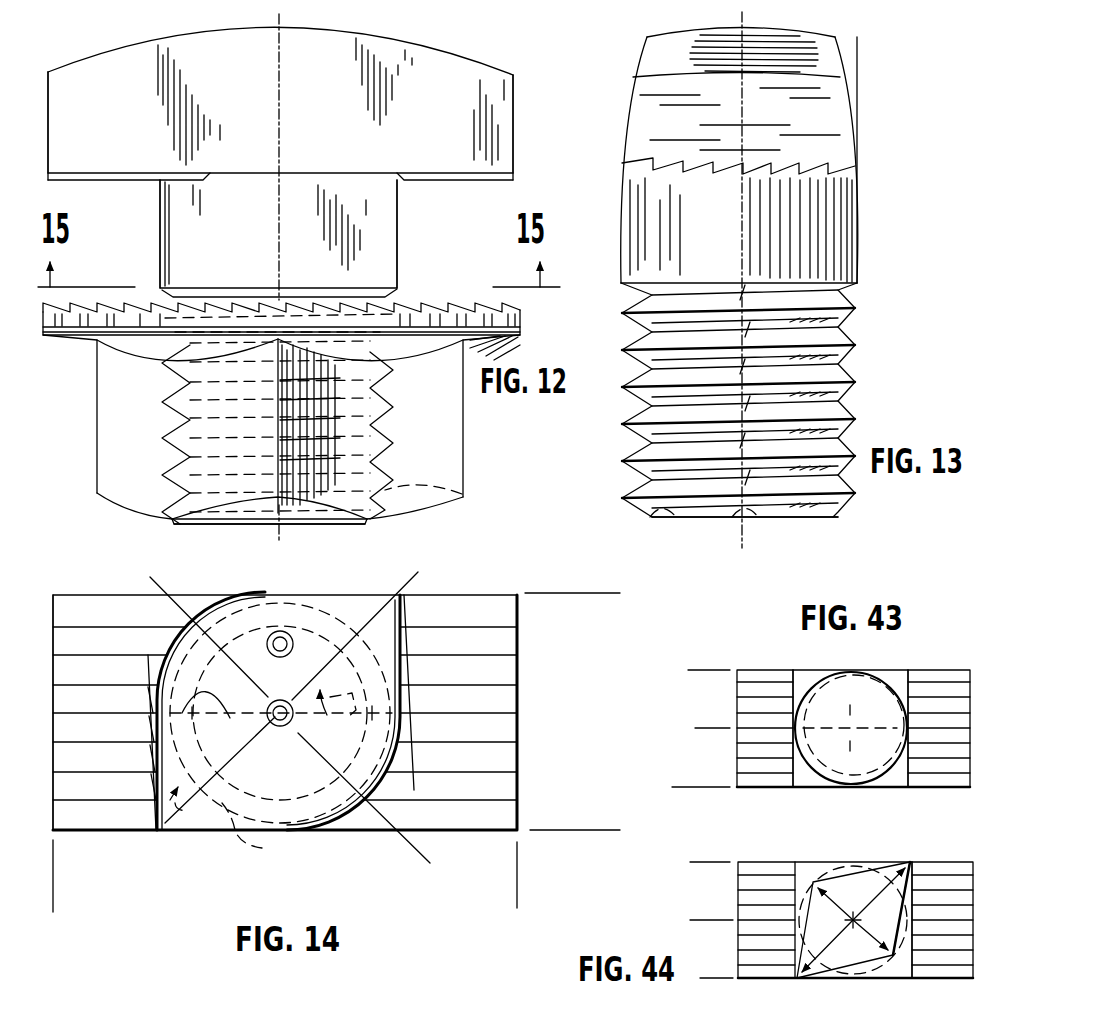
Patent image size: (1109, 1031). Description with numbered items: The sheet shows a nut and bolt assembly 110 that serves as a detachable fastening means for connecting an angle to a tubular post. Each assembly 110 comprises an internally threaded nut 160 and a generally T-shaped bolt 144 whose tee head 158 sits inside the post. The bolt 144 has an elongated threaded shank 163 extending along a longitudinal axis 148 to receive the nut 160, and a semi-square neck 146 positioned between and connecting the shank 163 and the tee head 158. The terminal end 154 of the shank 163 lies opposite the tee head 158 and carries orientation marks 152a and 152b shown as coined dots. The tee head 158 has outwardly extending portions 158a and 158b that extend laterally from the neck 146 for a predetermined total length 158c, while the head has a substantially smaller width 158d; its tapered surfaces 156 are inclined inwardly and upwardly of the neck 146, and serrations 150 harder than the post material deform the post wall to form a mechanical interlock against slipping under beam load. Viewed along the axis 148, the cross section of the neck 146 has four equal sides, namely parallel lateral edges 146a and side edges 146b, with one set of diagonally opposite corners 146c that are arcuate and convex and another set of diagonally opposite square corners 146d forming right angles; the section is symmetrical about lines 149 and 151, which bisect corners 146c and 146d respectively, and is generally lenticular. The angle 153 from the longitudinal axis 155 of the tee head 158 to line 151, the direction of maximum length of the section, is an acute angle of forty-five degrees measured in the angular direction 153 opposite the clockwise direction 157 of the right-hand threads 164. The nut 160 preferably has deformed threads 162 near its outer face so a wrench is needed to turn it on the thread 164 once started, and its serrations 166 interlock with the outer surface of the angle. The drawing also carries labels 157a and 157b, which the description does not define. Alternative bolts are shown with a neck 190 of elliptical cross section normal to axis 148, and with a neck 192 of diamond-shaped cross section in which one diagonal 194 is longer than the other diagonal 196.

In FIG. 12, the nut and bolt assembly 110 is at (158, 263).
In FIG. 12, the bolt 144 is at (368, 222).
In FIG. 13, the bolt 144 is at (862, 201).
In FIG. 14, the bolt 144 is at (566, 555).
In FIG. 43, the bolt 144 is at (974, 668).
In FIG. 44, the bolt 144 is at (971, 858).
In FIG. 12, the semi-square neck 146 is at (398, 257).
In FIG. 13, the semi-square neck 146 is at (858, 258).
In FIG. 14, the semi-square neck 146 is at (207, 834).
In FIG. 14, the lateral edges 146a is at (337, 578).
In FIG. 14, the side edges 146b is at (160, 757).
In FIG. 14, the arcuate corners 146c is at (167, 641).
In FIG. 14, the square corners 146d is at (398, 597).
In FIG. 12, the longitudinal axis 148 is at (280, 73).
In FIG. 13, the longitudinal axis 148 is at (744, 103).
In FIG. 14, the longitudinal axis 148 is at (297, 677).
In FIG. 43, the longitudinal axis 148 is at (851, 722).
In FIG. 44, the longitudinal axis 148 is at (797, 927).
In FIG. 14, the line 149 is at (420, 852).
In FIG. 12, the serrations 150 is at (480, 181).
In FIG. 13, the serrations 150 is at (830, 178).
In FIG. 14, the serrations 150 is at (497, 688).
In FIG. 43, the serrations 150 is at (937, 712).
In FIG. 44, the serrations 150 is at (945, 907).
In FIG. 14, the line 151 is at (420, 580).
In FIG. 13, the orientation mark 152a is at (668, 519).
In FIG. 14, the orientation mark 152a is at (292, 637).
In FIG. 13, the orientation mark 152b is at (733, 519).
In FIG. 14, the orientation mark 152b is at (277, 727).
In FIG. 14, the angle 153 is at (338, 718).
In FIG. 12, the terminal end 154 is at (262, 528).
In FIG. 13, the terminal end 154 is at (835, 519).
In FIG. 14, the terminal end 154 is at (262, 848).
In FIG. 43, the terminal end 154 is at (810, 792).
In FIG. 14, the longitudinal axis of tee head 155 is at (208, 713).
In FIG. 43, the longitudinal axis of tee head 155 is at (712, 725).
In FIG. 44, the longitudinal axis of tee head 155 is at (700, 920).
In FIG. 13, the tapered surfaces 156 is at (842, 100).
In FIG. 14, the clockwise direction 157 is at (298, 573).
In FIG. 14, the slot wall 157a is at (588, 832).
In FIG. 43, the slot wall 157a is at (690, 788).
In FIG. 44, the slot wall 157a is at (718, 980).
In FIG. 14, the slot wall 157b is at (563, 592).
In FIG. 43, the slot wall 157b is at (733, 636).
In FIG. 44, the slot wall 157b is at (705, 842).
In FIG. 12, the tee head 158 is at (518, 82).
In FIG. 13, the tee head 158 is at (838, 52).
In FIG. 14, the tee head 158 is at (522, 834).
In FIG. 12, the outwardly extending portion 158a is at (46, 127).
In FIG. 14, the outwardly extending portion 158a is at (53, 630).
In FIG. 12, the outwardly extending portion 158b is at (548, 126).
In FIG. 14, the outwardly extending portion 158b is at (520, 754).
In FIG. 14, the total length 158c is at (57, 898).
In FIG. 13, the width 158d is at (852, 230).
In FIG. 14, the width 158d is at (607, 597).
In FIG. 12, the nut 160 is at (470, 470).
In FIG. 12, the deformed threads 162 is at (462, 494).
In FIG. 12, the threaded shank 163 is at (366, 400).
In FIG. 13, the threaded shank 163 is at (843, 398).
In FIG. 14, the threaded shank 163 is at (250, 787).
In FIG. 43, the threaded shank 163 is at (808, 678).
In FIG. 44, the threaded shank 163 is at (888, 958).
In FIG. 13, the right hand threads 164 is at (838, 389).
In FIG. 12, the serrations 166 is at (475, 302).
In FIG. 43, the neck 190 is at (793, 777).
In FIG. 44, the neck 192 is at (813, 880).
In FIG. 44, the diagonal 194 is at (820, 975).
In FIG. 44, the diagonal 196 is at (873, 943).